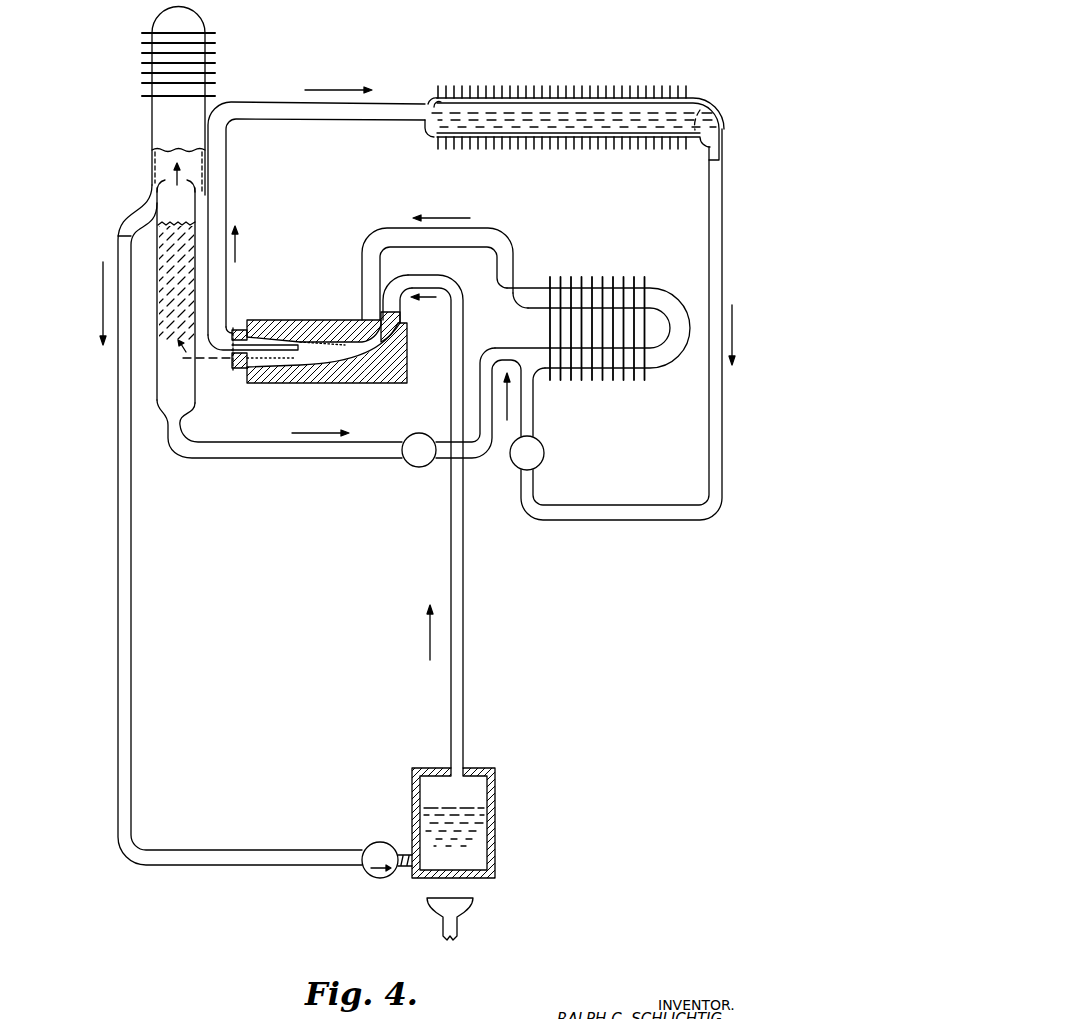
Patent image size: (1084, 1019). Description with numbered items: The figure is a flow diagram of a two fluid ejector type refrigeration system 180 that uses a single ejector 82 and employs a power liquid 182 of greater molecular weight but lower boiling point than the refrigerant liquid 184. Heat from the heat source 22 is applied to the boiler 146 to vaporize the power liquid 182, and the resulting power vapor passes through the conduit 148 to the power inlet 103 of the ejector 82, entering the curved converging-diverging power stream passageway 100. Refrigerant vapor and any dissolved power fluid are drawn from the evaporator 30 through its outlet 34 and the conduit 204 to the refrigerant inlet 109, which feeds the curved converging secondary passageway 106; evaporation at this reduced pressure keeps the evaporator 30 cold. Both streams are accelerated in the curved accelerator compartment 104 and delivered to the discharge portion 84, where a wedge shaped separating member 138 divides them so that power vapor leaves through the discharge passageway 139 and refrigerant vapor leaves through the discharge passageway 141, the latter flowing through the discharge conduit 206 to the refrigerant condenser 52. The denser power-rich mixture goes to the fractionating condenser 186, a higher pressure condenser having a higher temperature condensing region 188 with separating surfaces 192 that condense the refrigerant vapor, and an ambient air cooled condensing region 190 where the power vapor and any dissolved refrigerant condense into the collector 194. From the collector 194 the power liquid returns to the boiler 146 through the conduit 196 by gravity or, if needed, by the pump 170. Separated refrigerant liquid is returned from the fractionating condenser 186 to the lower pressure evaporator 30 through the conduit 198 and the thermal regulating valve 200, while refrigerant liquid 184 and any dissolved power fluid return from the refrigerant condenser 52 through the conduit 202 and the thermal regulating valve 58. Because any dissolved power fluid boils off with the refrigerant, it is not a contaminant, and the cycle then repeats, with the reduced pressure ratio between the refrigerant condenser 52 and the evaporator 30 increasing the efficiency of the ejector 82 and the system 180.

The heat source 22 is at (478, 905).
The evaporator 30 is at (693, 270).
The evaporator outlet 34 is at (513, 297).
The refrigerant condenser 52 is at (486, 95).
The thermal regulating valve 58 is at (545, 453).
The ejector 82 is at (408, 383).
The discharge portion 84 is at (264, 362).
The curved converging-diverging power stream passageway 100 is at (442, 337).
The power inlet 103 is at (400, 314).
The curved accelerator compartment 104 is at (445, 366).
The curved converging secondary passageway 106 is at (360, 318).
The refrigerant inlet 109 is at (378, 310).
The wedge shaped separating member 138 is at (287, 344).
The discharge passageway 139 is at (250, 368).
The discharge passageway 141 is at (238, 330).
The boiler 146 is at (496, 777).
The conduit 148 is at (464, 638).
The pump 170 is at (372, 878).
The two fluid ejector type refrigeration system 180 is at (305, 614).
The power liquid 182 is at (470, 812).
The refrigerant liquid 184 is at (695, 122).
The fractionating condenser 186 is at (150, 148).
The condensing region 188 is at (162, 341).
The condensing region 190 is at (205, 52).
The separating surfaces 192 is at (176, 289).
The collector 194 is at (201, 193).
The conduit 196 is at (131, 660).
The conduit 198 is at (262, 458).
The thermal regulating valve 200 is at (416, 468).
The conduit 202 is at (725, 204).
The conduit 204 is at (506, 228).
The discharge conduit 206 is at (228, 160).